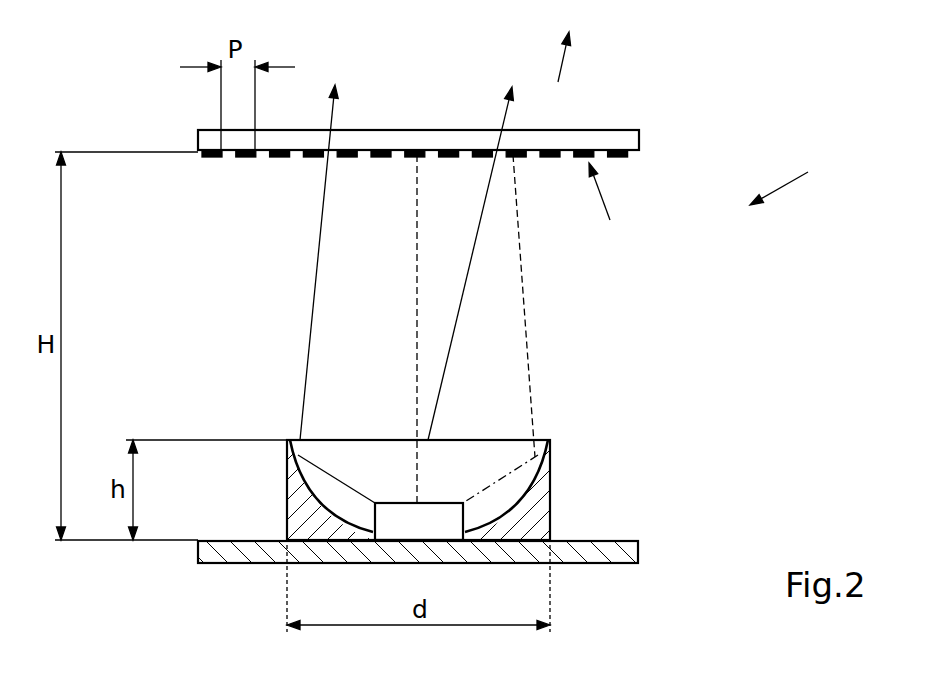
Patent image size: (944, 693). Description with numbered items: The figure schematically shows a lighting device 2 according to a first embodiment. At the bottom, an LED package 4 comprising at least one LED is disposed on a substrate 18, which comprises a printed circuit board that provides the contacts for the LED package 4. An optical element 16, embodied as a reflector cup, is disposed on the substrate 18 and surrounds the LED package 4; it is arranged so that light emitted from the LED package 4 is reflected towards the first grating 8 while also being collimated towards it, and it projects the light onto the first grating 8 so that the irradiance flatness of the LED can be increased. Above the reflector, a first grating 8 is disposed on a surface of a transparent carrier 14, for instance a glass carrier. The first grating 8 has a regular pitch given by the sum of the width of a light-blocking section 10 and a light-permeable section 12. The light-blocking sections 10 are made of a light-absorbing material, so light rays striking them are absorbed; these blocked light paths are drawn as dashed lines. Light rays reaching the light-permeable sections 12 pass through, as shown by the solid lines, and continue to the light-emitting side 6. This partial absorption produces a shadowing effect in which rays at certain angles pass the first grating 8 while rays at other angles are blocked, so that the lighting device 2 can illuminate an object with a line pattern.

The lighting device 2 is at (789, 177).
The LED package 4 is at (410, 520).
The light-emitting side 6 is at (560, 73).
The first grating 8 is at (606, 206).
The light-blocking section 10 is at (245, 157).
The light-permeable section 12 is at (229, 157).
The transparent carrier 14 is at (625, 141).
The optical element 16 is at (540, 500).
The substrate 18 is at (620, 552).